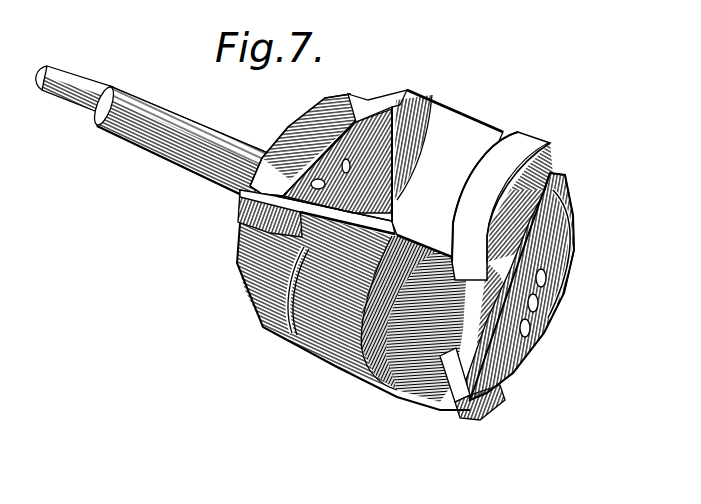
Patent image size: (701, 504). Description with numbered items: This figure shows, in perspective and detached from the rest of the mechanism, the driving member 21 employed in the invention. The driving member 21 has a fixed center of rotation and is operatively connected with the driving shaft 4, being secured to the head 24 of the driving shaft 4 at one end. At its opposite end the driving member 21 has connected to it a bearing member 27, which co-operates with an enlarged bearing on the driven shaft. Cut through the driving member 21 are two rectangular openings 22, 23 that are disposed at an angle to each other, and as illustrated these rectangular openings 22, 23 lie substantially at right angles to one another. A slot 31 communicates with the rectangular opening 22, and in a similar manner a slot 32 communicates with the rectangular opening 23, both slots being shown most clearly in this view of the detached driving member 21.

The driving shaft 4 is at (172, 140).
The driving member 21 is at (502, 245).
The rectangular opening 22 is at (420, 120).
The rectangular opening 23 is at (392, 397).
The head 24 is at (327, 113).
The bearing member 27 is at (563, 237).
The slot 31 is at (377, 123).
The slot 32 is at (467, 410).